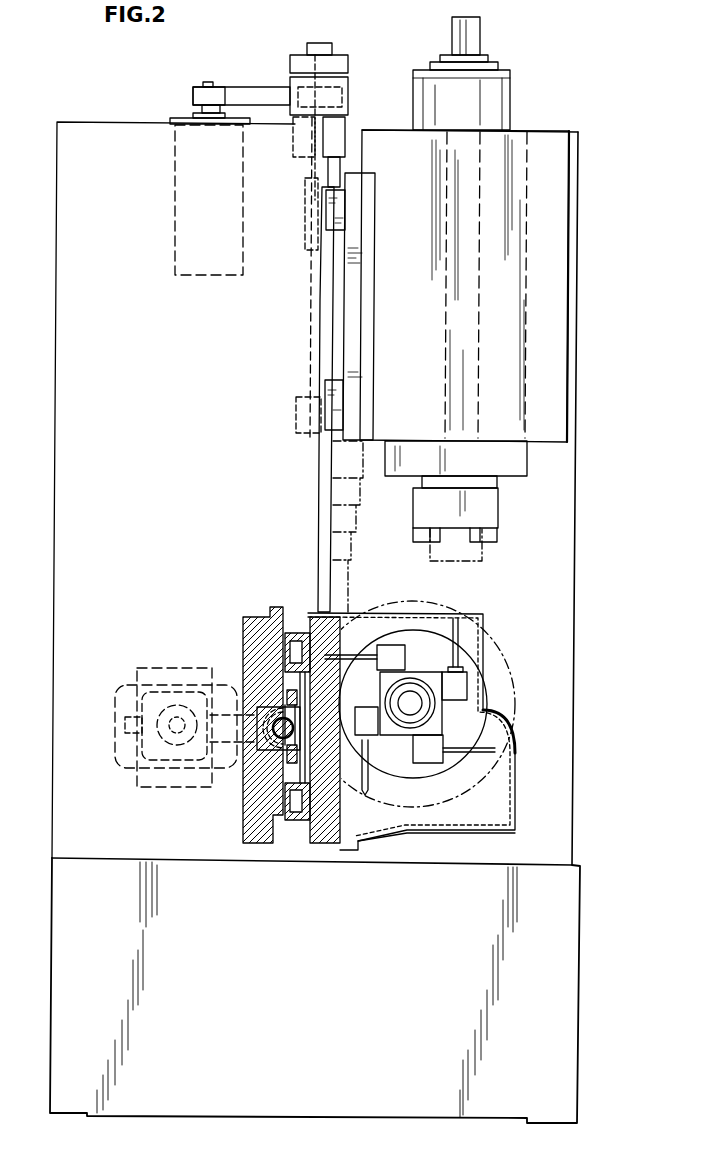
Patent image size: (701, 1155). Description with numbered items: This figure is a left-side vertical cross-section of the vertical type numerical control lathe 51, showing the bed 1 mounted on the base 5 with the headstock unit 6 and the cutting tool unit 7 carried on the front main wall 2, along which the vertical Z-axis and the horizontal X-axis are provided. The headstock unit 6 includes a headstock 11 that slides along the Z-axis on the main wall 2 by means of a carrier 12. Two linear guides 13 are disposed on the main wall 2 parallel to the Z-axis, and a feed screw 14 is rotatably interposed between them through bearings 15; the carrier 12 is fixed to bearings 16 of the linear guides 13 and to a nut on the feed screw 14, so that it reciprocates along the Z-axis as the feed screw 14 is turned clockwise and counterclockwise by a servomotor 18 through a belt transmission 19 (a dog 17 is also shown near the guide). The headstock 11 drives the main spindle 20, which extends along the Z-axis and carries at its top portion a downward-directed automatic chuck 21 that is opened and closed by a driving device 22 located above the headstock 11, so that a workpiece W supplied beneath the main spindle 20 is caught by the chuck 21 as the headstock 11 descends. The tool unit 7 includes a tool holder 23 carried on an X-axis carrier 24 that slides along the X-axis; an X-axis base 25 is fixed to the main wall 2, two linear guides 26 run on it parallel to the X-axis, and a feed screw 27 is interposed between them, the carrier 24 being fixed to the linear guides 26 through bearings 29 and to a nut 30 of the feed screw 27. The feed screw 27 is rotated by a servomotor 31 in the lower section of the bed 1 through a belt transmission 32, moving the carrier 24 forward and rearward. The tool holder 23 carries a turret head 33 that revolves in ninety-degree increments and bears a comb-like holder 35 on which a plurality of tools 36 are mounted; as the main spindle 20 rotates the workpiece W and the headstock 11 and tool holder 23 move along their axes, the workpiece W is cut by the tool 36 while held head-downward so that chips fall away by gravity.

The bed 1 is at (54, 452).
The front main wall 2 is at (330, 540).
The base 5 is at (56, 1000).
The headstock unit 6 is at (544, 130).
The cutting tool unit 7 is at (521, 742).
The headstock 11 is at (557, 296).
The carrier 12 is at (365, 304).
The linear guides 13 is at (327, 456).
The feed screw 14 is at (311, 293).
The bearings 15 is at (333, 133).
The bearings 16 is at (338, 209).
The dog 17 is at (305, 220).
The servomotor 18 is at (177, 188).
The belt transmission 19 is at (250, 87).
The main spindle 20 is at (480, 227).
The automatic chuck 21 is at (478, 512).
The driving device 22 is at (495, 100).
The tool holder 23 is at (452, 830).
The X-axis carrier 24 is at (331, 850).
The X-axis base 25 is at (248, 842).
The linear guides 26 is at (290, 640).
The feed screw 27 is at (270, 730).
The bearings 29 is at (300, 670).
The nut 30 is at (287, 690).
The servomotor 31 is at (135, 786).
The belt transmission 32 is at (232, 770).
The turret head 33 is at (430, 668).
The comb-like holder 35 is at (430, 760).
The tools 36 is at (330, 657).
The lathe 51 is at (55, 168).
The workpiece W is at (478, 561).